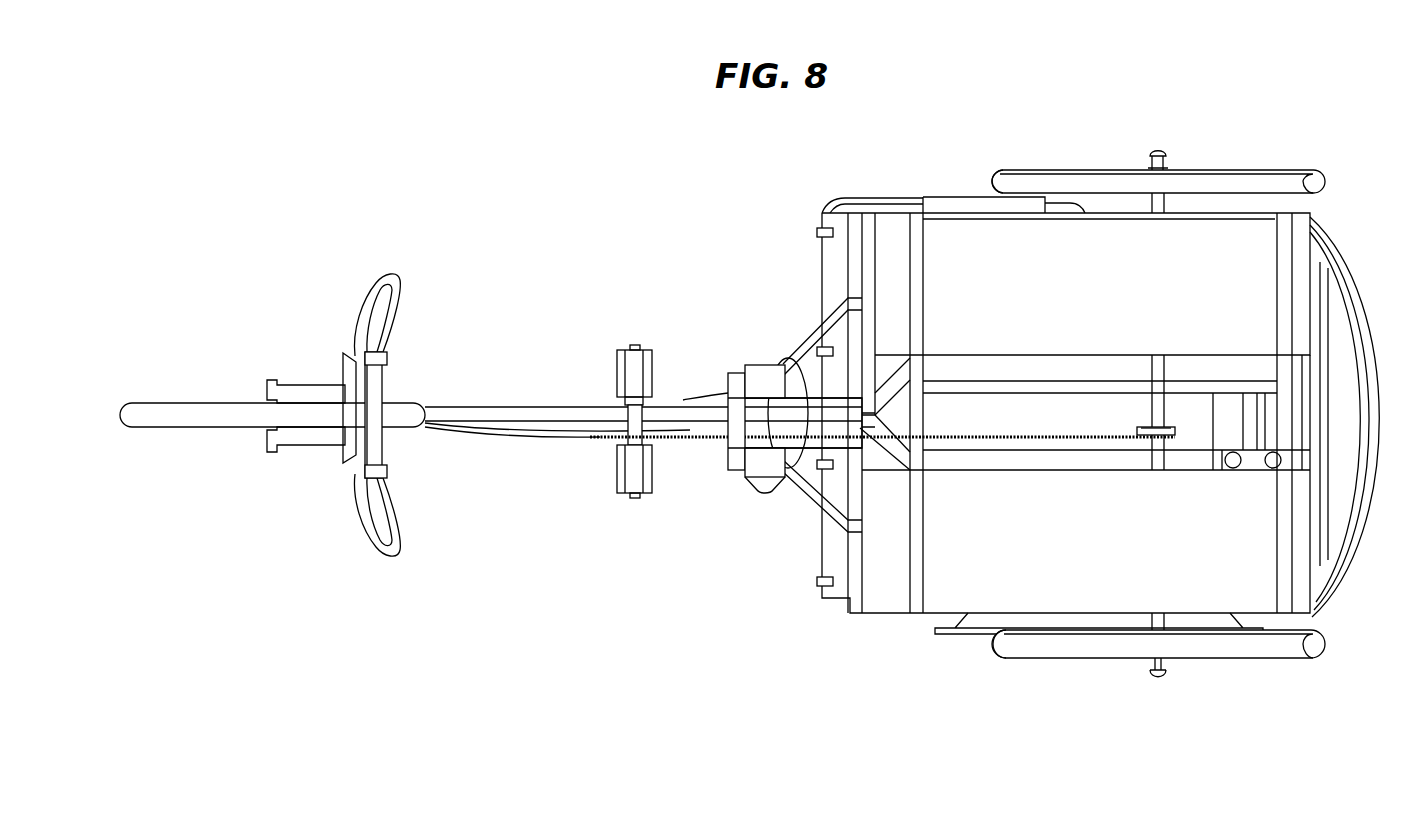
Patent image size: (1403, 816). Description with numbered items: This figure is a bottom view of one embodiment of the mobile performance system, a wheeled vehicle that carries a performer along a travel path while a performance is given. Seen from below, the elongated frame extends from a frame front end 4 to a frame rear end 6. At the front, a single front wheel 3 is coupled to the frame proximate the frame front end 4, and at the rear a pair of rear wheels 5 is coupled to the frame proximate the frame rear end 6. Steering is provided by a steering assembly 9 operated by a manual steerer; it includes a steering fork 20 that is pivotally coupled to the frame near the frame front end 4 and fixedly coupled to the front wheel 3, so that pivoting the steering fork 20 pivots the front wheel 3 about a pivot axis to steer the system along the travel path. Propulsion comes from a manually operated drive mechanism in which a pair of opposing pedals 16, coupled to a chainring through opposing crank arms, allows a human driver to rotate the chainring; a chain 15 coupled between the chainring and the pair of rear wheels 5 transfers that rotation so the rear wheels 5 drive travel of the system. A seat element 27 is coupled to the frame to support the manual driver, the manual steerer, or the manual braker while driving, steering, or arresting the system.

The front wheel 3 is at (185, 410).
The frame front end 4 is at (430, 413).
The pair of rear wheels 5 is at (1240, 185).
The frame rear end 6 is at (1155, 410).
The steering assembly 9 is at (373, 415).
The chain 15 is at (700, 440).
The pair of opposing pedals 16 is at (622, 372).
The steering fork 20 is at (302, 388).
The seat element 27 is at (795, 395).